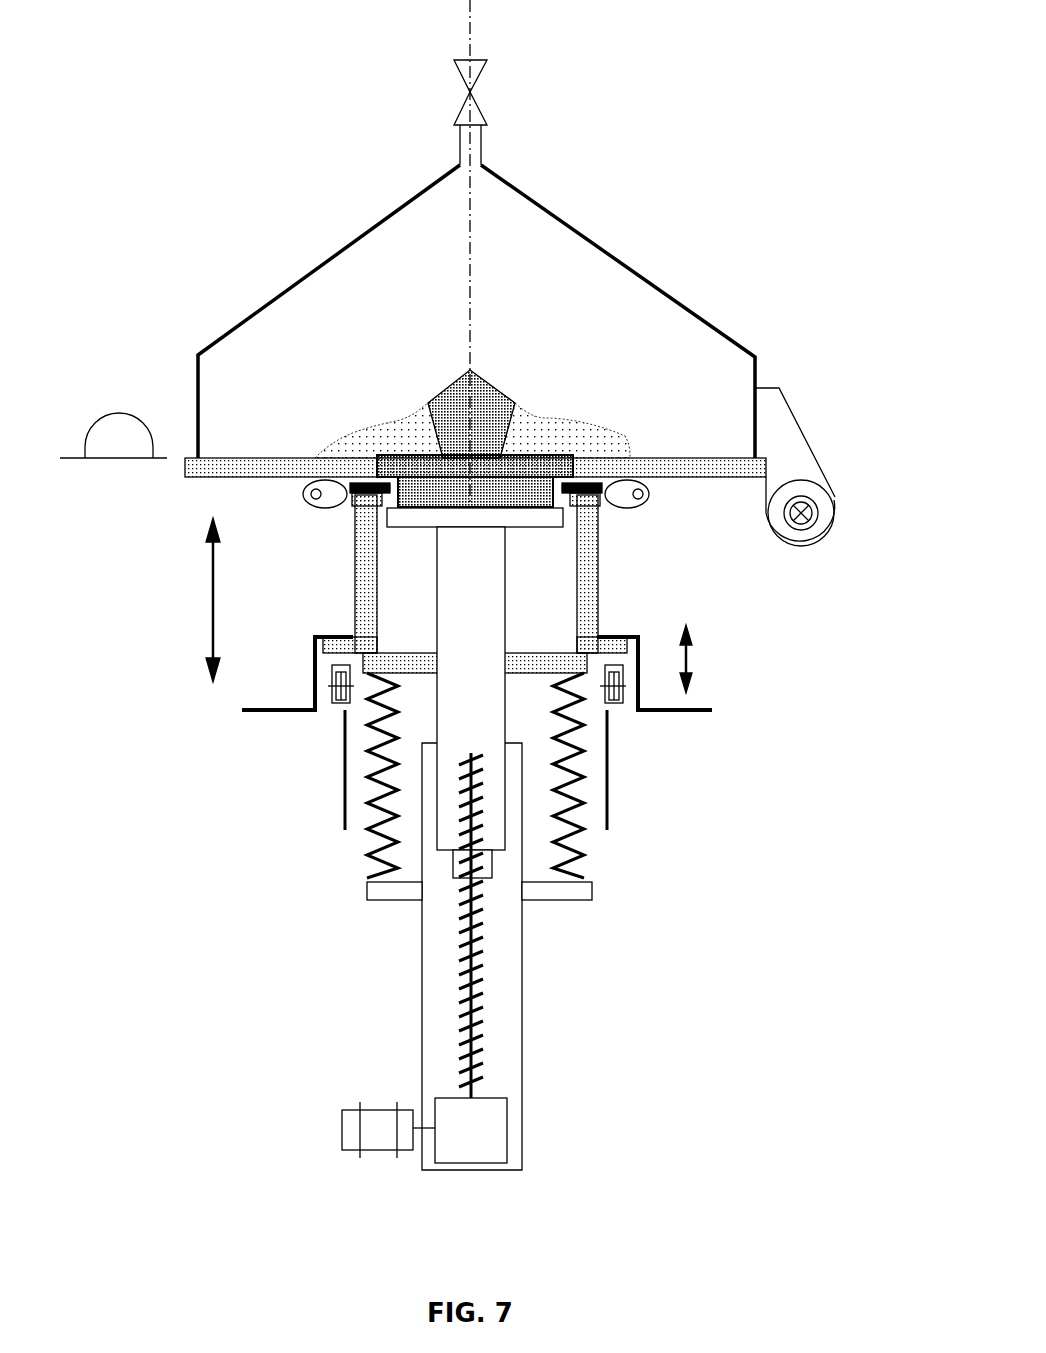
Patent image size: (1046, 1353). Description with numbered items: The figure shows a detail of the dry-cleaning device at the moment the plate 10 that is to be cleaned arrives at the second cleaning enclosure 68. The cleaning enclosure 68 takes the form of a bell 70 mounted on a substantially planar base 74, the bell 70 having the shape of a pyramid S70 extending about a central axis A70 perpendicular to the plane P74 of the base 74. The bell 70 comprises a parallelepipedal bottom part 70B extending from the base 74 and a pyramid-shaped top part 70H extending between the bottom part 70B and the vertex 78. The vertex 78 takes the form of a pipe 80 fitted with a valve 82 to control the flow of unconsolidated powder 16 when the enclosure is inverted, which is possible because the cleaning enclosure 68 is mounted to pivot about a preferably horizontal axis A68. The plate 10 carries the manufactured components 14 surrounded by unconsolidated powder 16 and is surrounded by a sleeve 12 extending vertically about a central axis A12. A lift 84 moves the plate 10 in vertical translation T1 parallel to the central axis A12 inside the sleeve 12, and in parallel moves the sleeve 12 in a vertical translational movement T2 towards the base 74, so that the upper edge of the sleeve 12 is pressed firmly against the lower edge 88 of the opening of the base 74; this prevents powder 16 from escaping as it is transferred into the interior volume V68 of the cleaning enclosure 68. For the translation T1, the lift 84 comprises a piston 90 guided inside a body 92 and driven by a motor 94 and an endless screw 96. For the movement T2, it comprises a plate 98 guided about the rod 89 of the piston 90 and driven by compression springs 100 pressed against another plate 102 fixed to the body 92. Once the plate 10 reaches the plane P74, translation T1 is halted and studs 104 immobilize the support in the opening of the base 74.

The central axis A70 is at (470, 22).
The valve 82 is at (455, 78).
The pipe 80 is at (459, 148).
The vertex 78 is at (490, 147).
The top part 70H is at (522, 195).
The pyramid S70 is at (350, 235).
The second cleaning enclosure 68 is at (636, 254).
The bell 70 is at (682, 302).
The bottom part 70B is at (758, 372).
The interior volume V68 is at (267, 382).
The base 74 is at (683, 458).
The plane P74 is at (113, 435).
The axis A68 is at (800, 528).
The unconsolidated powder 16 is at (540, 415).
The manufactured components 14 is at (456, 402).
The plate 10 is at (403, 460).
The studs 104 is at (354, 495).
The lower edge 88 is at (590, 500).
The piston 90 is at (530, 520).
The plate 98 is at (541, 665).
The sleeve 12 is at (592, 606).
The body 92 is at (422, 990).
The plate 102 is at (557, 900).
The compression springs 100 is at (367, 860).
The central axis A12 is at (470, 553).
The rod 89 is at (500, 690).
The endless screw 96 is at (472, 1008).
The motor 94 is at (375, 1155).
The lift 84 is at (622, 1069).
The vertical translation T1 is at (194, 600).
The vertical translational movement T2 is at (708, 659).